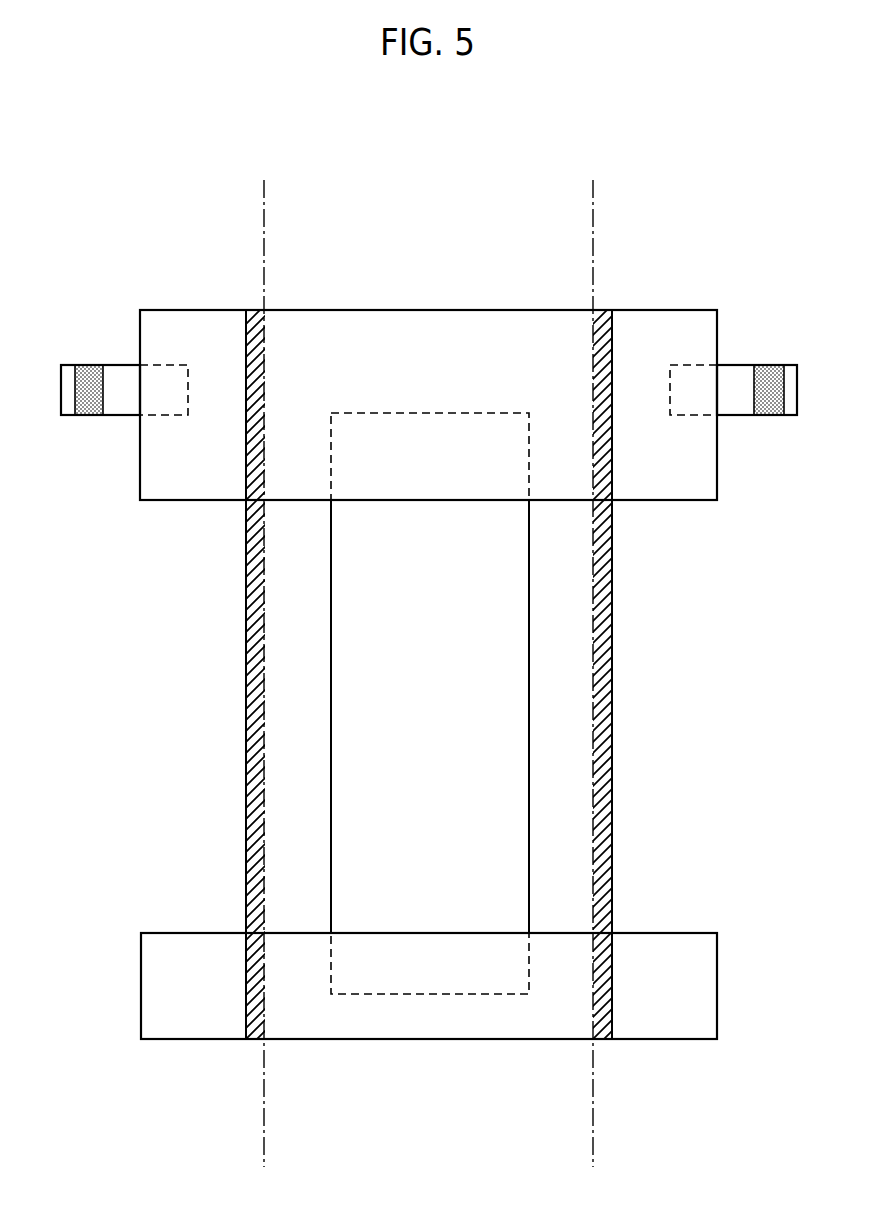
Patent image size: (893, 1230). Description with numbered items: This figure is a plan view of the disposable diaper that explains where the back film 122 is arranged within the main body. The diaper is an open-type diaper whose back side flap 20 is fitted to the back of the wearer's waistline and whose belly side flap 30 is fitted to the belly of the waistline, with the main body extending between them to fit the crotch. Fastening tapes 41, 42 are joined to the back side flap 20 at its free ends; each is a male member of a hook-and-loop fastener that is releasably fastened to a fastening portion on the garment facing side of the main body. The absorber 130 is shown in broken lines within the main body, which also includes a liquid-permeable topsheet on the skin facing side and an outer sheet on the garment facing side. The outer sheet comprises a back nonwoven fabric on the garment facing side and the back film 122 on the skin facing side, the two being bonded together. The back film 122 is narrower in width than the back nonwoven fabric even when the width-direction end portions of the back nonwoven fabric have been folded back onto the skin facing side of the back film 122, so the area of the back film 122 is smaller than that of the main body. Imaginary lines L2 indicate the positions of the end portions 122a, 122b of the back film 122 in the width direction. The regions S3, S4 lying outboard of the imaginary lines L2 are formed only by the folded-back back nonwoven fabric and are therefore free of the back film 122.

The back side flap 20 is at (364, 318).
The belly side flap 30 is at (432, 1039).
The absorber 130 is at (445, 413).
The back film 122 is at (427, 619).
The end portion of the back film 122a is at (612, 580).
The end portion of the back film 122b is at (246, 582).
The region S3 is at (612, 805).
The region S4 is at (255, 805).
The imaginary line L2 is at (428, 656).
The fastening tape 41 is at (735, 383).
The fastening tape 42 is at (118, 380).